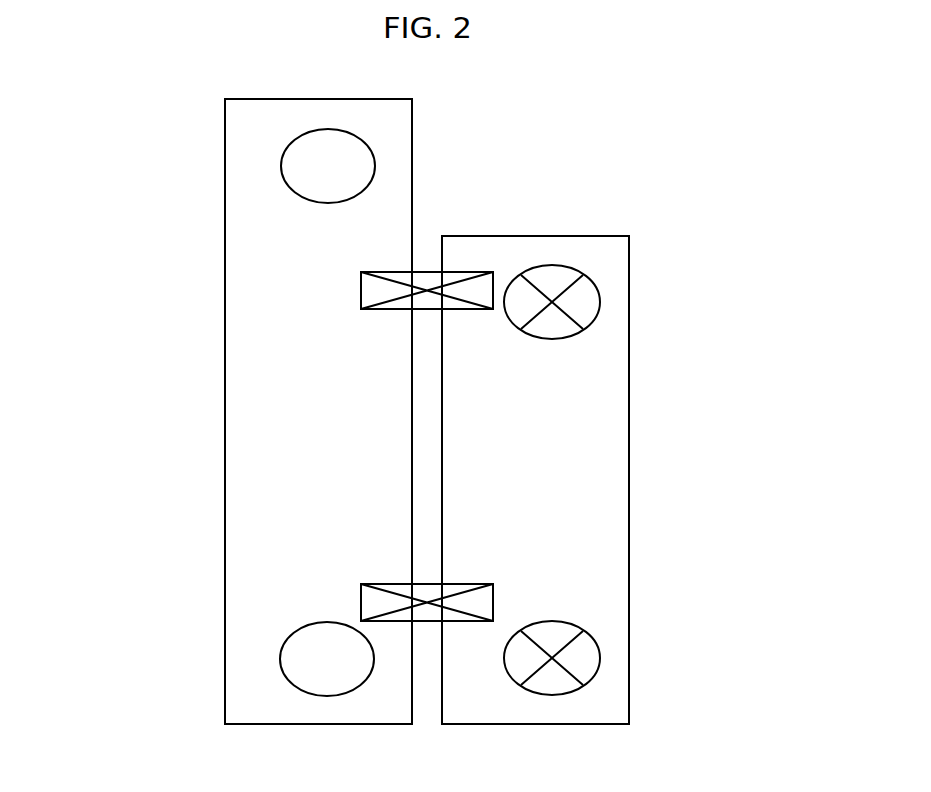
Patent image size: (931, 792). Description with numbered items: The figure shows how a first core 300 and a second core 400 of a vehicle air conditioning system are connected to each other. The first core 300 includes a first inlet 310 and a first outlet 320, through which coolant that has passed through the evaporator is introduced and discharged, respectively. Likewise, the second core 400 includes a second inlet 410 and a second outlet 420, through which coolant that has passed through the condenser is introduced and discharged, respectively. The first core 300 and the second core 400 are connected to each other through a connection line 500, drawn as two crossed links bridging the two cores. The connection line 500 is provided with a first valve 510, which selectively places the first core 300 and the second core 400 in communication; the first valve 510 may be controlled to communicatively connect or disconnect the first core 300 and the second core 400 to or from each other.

The first core 300 is at (248, 480).
The first inlet 310 is at (310, 169).
The first outlet 320 is at (312, 661).
The second core 400 is at (603, 478).
The second inlet 410 is at (582, 300).
The second outlet 420 is at (582, 658).
The connection line 500 is at (425, 270).
The first valve 510 is at (472, 300).